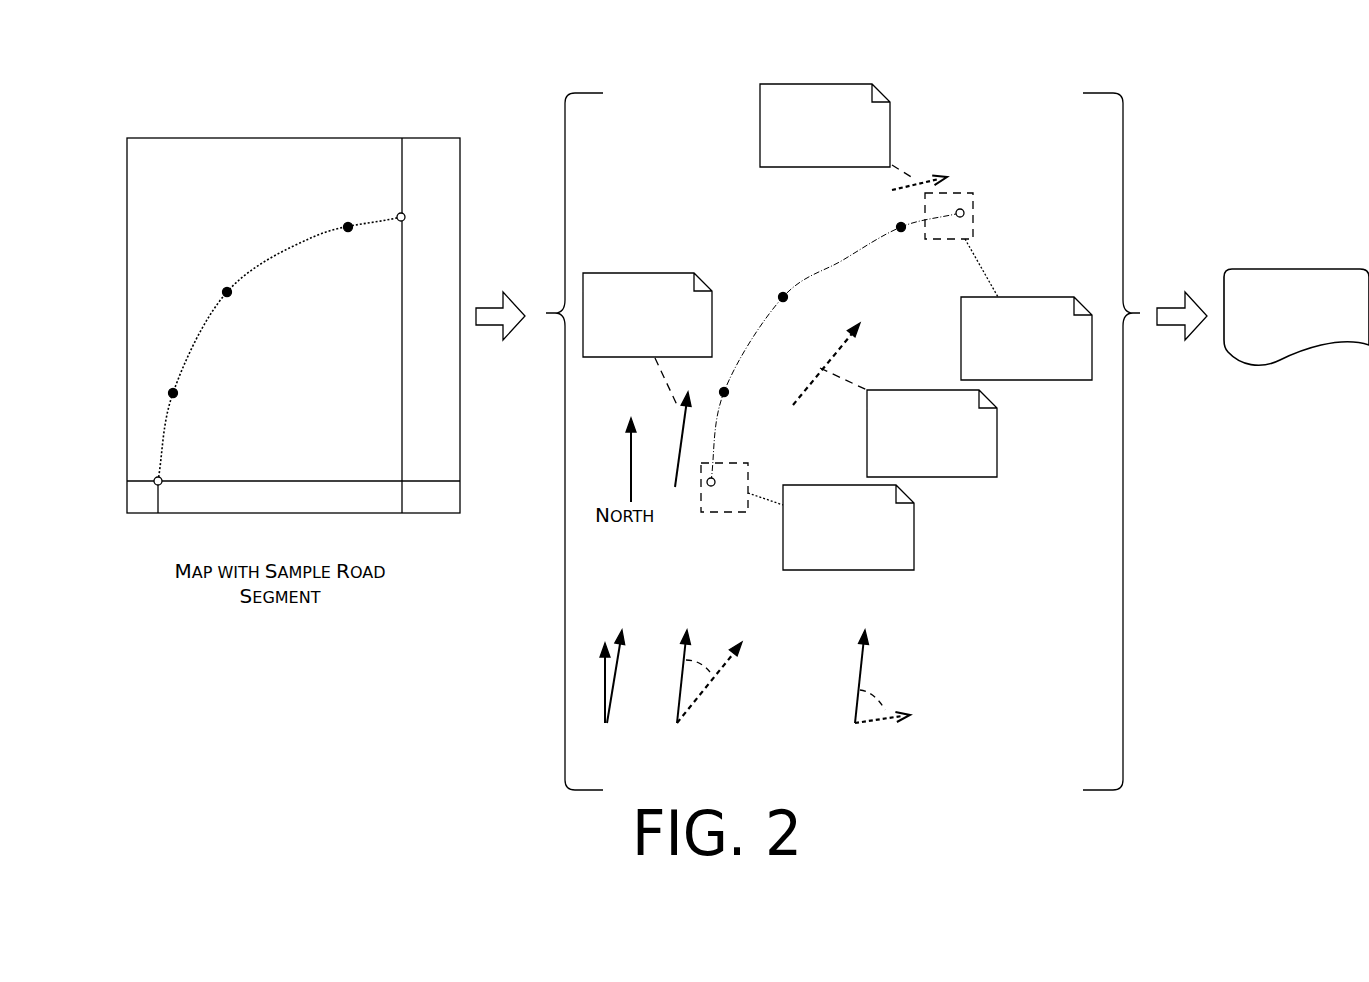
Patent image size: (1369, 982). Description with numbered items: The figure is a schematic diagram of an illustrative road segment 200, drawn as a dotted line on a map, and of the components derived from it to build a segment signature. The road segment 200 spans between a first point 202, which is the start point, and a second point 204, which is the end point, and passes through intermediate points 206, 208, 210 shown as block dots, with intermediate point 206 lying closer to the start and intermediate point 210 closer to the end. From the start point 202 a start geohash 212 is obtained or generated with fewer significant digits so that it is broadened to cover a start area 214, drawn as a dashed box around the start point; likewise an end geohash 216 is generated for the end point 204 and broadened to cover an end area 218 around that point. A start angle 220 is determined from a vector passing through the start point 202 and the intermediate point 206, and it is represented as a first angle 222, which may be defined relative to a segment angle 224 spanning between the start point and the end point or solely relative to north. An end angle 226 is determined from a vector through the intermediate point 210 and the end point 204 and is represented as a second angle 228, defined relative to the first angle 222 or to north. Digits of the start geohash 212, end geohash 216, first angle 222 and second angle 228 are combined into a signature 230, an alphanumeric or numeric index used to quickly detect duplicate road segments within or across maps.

The road segment 200 is at (313, 237).
The first point 202 is at (161, 483).
The second point 204 is at (403, 214).
The intermediate point 206 is at (173, 390).
The intermediate point 208 is at (227, 290).
The intermediate point 210 is at (348, 225).
The start geohash 212 is at (829, 566).
The start area 214 is at (715, 512).
The end geohash 216 is at (1007, 376).
The end area 218 is at (975, 222).
The start angle 220 is at (628, 348).
The first angle 222 is at (671, 705).
The segment angle 224 is at (913, 471).
The end angle 226 is at (806, 156).
The second angle 228 is at (875, 705).
The signature 230 is at (1285, 341).